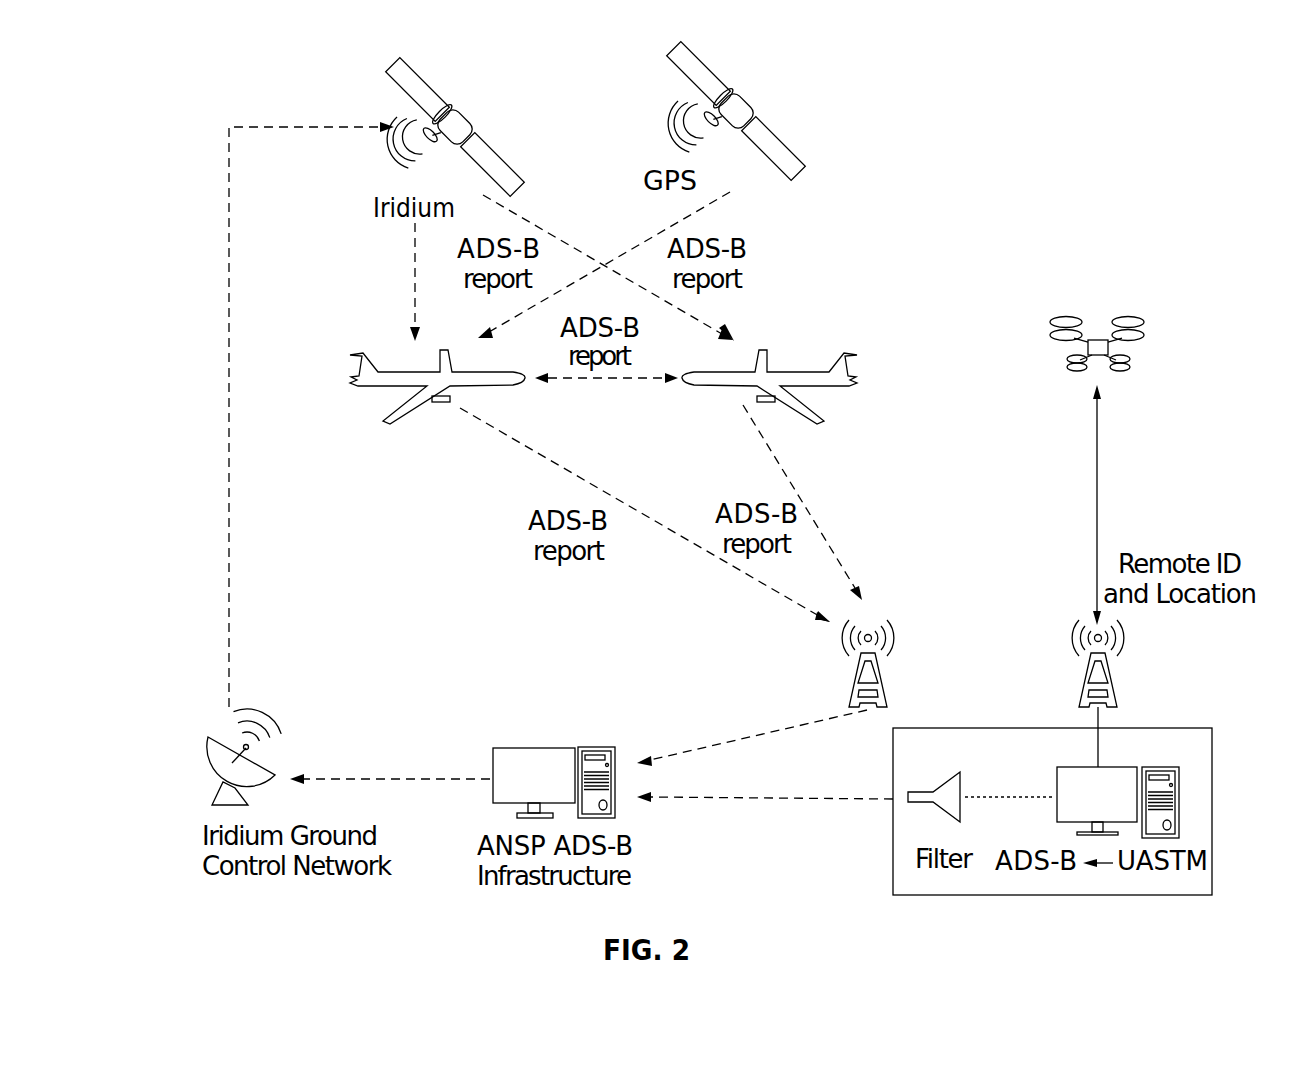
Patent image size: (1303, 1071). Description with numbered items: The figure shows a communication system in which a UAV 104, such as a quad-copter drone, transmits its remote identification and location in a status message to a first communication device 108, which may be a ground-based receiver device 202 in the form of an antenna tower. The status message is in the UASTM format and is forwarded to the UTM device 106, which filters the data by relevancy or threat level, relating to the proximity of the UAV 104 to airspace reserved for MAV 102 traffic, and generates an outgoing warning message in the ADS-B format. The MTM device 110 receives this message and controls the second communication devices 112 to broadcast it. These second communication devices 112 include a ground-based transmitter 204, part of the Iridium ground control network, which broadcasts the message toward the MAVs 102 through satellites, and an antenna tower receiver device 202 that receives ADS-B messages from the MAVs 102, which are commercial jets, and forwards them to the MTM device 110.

The MAV 102 is at (388, 392).
The UAV 104 is at (1145, 338).
The UTM device 106 is at (1177, 773).
The first communication device 108 is at (1113, 677).
The MTM device 110 is at (597, 747).
The second communication device 112 is at (855, 680).
The ground-based receiver device 202 is at (882, 675).
The ground-based transmitter 204 is at (215, 765).